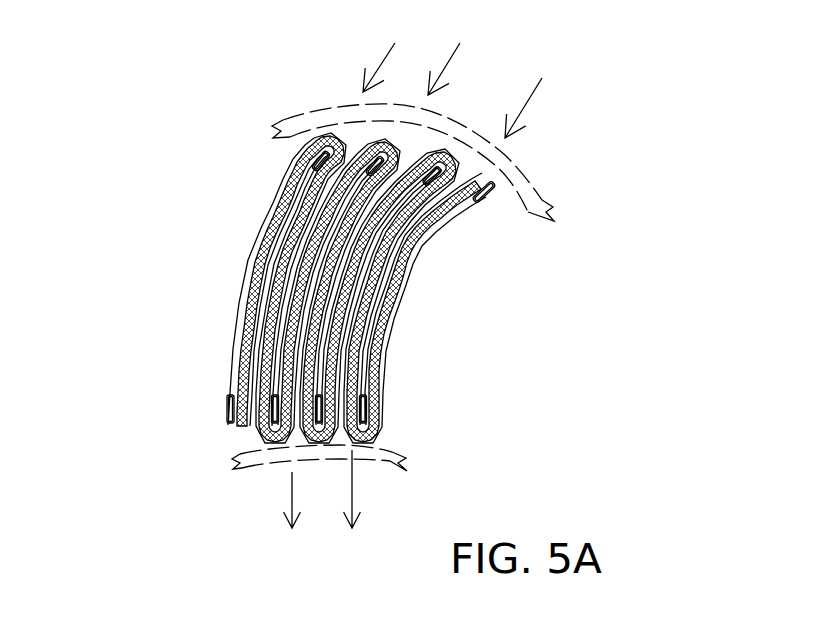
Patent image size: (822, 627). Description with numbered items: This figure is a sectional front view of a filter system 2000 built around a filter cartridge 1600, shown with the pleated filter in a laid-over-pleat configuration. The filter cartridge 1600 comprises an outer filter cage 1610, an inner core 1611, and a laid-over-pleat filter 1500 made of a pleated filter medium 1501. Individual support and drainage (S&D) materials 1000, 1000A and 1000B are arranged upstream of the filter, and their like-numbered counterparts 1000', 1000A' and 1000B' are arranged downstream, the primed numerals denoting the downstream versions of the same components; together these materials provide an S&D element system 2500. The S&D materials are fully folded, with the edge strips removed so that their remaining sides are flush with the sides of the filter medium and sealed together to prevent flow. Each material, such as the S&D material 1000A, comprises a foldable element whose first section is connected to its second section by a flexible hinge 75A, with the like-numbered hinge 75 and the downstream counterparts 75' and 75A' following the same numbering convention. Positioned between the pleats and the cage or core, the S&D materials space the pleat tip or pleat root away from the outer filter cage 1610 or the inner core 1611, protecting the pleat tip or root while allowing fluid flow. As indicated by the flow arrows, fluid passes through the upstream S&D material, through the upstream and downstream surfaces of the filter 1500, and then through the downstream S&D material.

The support and drainage material 1000 is at (254, 254).
The support and drainage material 1000A is at (250, 261).
The support and drainage material 1000B is at (235, 286).
The support and drainage material 1000' is at (532, 288).
The support and drainage material 1000A' is at (536, 312).
The support and drainage material 1000B' is at (620, 284).
The LOP filter 1500 is at (258, 197).
The pleated filter medium 1501 is at (165, 333).
The filter cartridge 1600 is at (393, 297).
The outer filter cage 1610 is at (508, 168).
The inner core 1611 is at (410, 455).
The filter system 2000 is at (190, 443).
The S&D element system 2500 is at (168, 150).
The incoming airflow 75 is at (451, 77).
The flexible hinge 75A is at (547, 75).
The outgoing airflow 75' is at (323, 514).
The flexible hinge 75A' is at (349, 532).